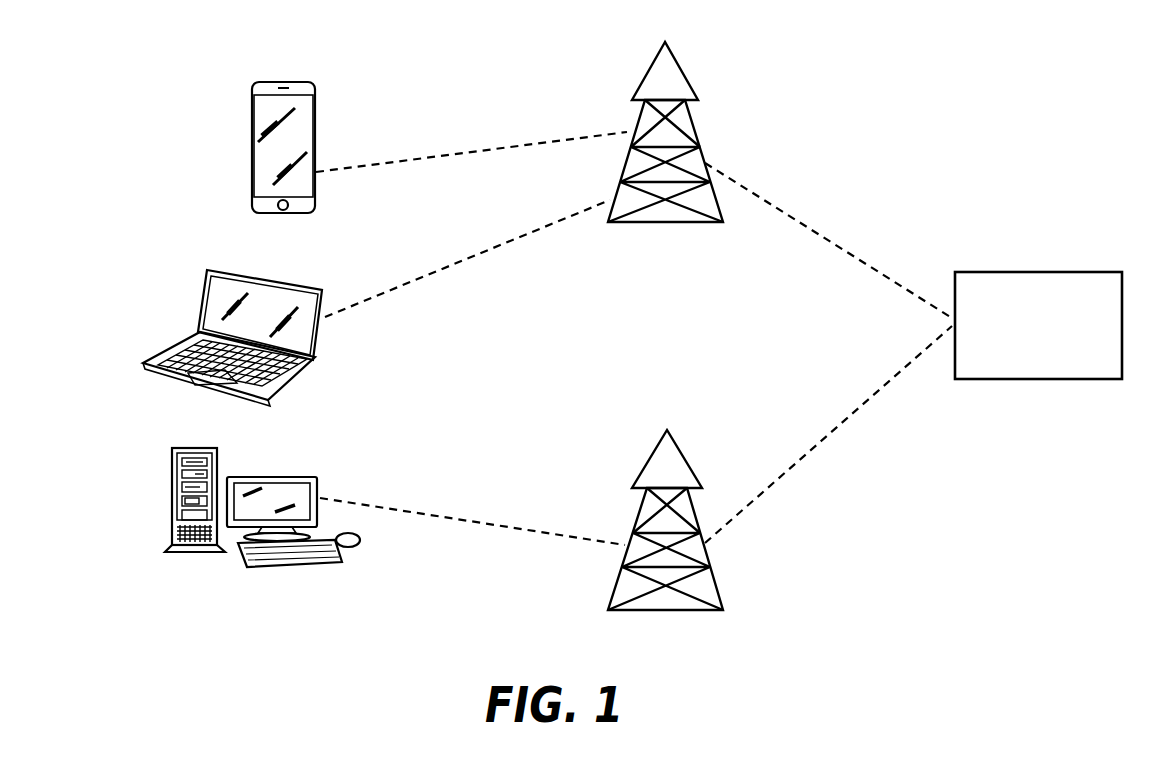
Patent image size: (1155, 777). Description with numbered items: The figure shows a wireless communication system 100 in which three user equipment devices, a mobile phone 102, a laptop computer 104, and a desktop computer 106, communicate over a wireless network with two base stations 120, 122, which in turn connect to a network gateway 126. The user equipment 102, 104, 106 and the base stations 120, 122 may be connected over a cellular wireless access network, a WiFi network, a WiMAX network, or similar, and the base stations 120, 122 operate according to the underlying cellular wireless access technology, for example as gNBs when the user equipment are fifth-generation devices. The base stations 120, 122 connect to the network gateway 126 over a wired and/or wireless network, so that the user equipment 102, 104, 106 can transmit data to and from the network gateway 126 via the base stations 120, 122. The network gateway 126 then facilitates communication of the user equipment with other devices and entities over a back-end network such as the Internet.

The communication system 100 is at (988, 29).
The user equipment 102 is at (252, 148).
The user equipment 104 is at (202, 293).
The user equipment 106 is at (172, 497).
The base station 120 is at (691, 120).
The base station 122 is at (720, 583).
The network gateway 126 is at (1045, 379).